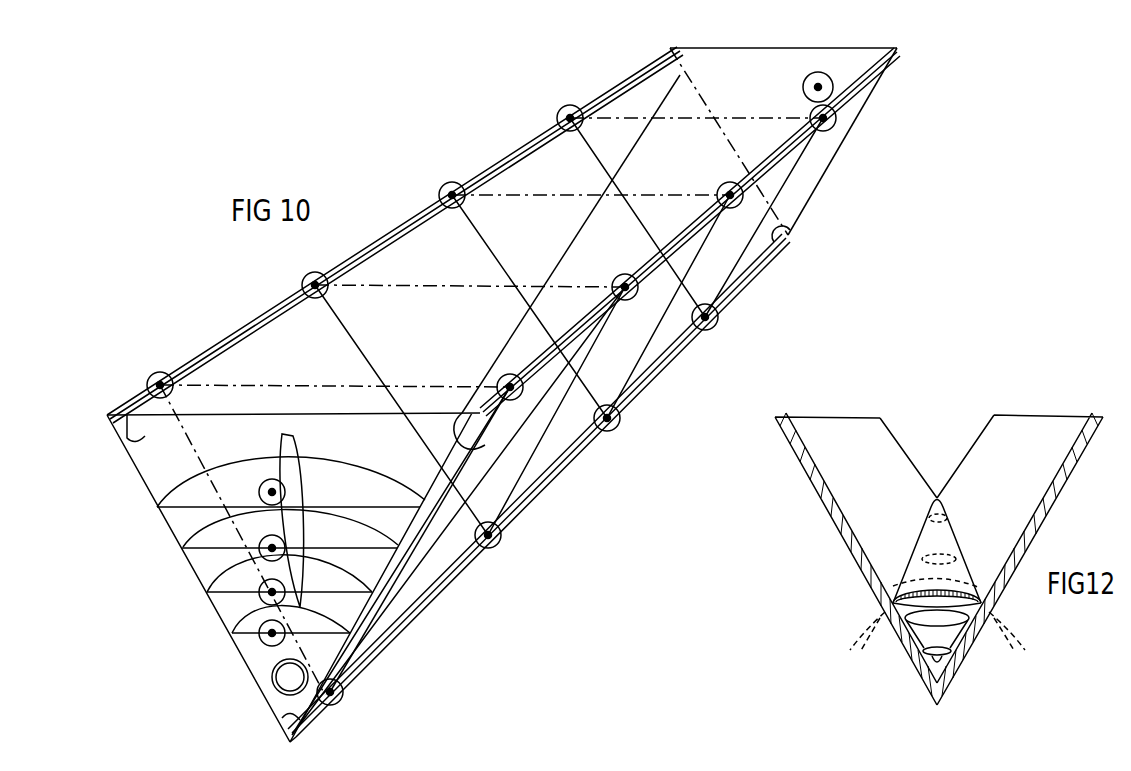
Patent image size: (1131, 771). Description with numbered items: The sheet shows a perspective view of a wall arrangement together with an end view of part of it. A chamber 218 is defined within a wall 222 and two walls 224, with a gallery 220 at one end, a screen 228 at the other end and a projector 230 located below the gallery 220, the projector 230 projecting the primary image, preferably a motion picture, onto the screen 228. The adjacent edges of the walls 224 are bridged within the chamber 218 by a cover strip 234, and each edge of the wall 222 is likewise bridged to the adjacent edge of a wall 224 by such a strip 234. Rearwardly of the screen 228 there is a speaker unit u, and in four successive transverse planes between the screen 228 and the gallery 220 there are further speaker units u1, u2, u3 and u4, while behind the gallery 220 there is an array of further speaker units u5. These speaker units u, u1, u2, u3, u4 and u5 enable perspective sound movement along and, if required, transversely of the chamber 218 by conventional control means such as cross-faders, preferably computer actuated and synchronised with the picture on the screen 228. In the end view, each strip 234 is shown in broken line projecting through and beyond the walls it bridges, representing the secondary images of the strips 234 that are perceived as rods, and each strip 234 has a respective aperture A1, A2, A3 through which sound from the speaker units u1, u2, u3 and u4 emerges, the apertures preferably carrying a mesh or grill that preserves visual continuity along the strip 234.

In FIG. 10, the wall 222 is at (717, 48).
In FIG. 10, the chamber 218 is at (540, 178).
In FIG. 10, the screen 228 is at (681, 232).
In FIG. 10, the wall 224 is at (832, 147).
In FIG. 12, the wall 224 is at (842, 442).
In FIG. 10, the cover strip 234 is at (125, 428).
In FIG. 12, the cover strip 234 is at (927, 533).
In FIG. 10, the gallery 220 is at (243, 582).
In FIG. 10, the projector 230 is at (272, 672).
In FIG. 10, the speaker unit u is at (833, 85).
In FIG. 10, the speaker unit u1 is at (557, 112).
In FIG. 12, the speaker unit u1 is at (930, 634).
In FIG. 10, the speaker unit u2 is at (440, 192).
In FIG. 10, the speaker unit u3 is at (302, 287).
In FIG. 10, the speaker unit u4 is at (147, 382).
In FIG. 10, the speaker units u5 is at (285, 438).
In FIG. 12, the aperture A1 is at (882, 580).
In FIG. 12, the aperture A2 is at (957, 538).
In FIG. 12, the aperture A3 is at (950, 503).